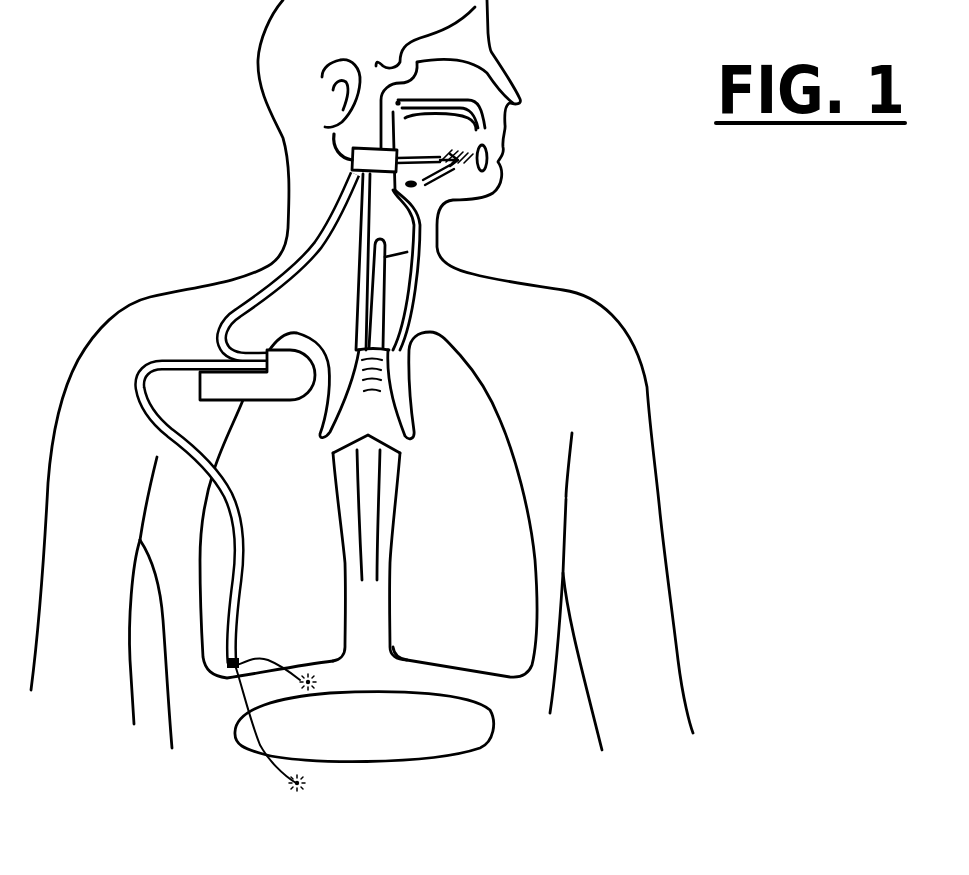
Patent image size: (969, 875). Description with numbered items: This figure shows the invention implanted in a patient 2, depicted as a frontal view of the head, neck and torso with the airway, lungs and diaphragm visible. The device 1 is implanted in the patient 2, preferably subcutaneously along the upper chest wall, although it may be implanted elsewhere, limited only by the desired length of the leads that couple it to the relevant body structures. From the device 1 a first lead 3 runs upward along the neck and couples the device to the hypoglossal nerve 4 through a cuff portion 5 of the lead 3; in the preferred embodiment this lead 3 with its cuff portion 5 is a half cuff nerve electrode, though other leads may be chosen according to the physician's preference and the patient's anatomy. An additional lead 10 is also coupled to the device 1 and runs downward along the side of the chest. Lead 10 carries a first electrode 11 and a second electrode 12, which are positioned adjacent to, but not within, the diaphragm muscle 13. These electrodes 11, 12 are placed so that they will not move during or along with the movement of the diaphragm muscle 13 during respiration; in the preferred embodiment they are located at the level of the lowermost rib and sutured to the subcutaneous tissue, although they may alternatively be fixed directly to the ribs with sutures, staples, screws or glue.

The device 1 is at (270, 388).
The patient 2 is at (568, 289).
The first lead 3 is at (311, 230).
The hypoglossal nerve 4 is at (343, 150).
The cuff portion 5 is at (400, 102).
The additional lead 10 is at (133, 408).
The first electrode 11 is at (283, 791).
The second electrode 12 is at (323, 673).
The diaphragm muscle 13 is at (450, 753).